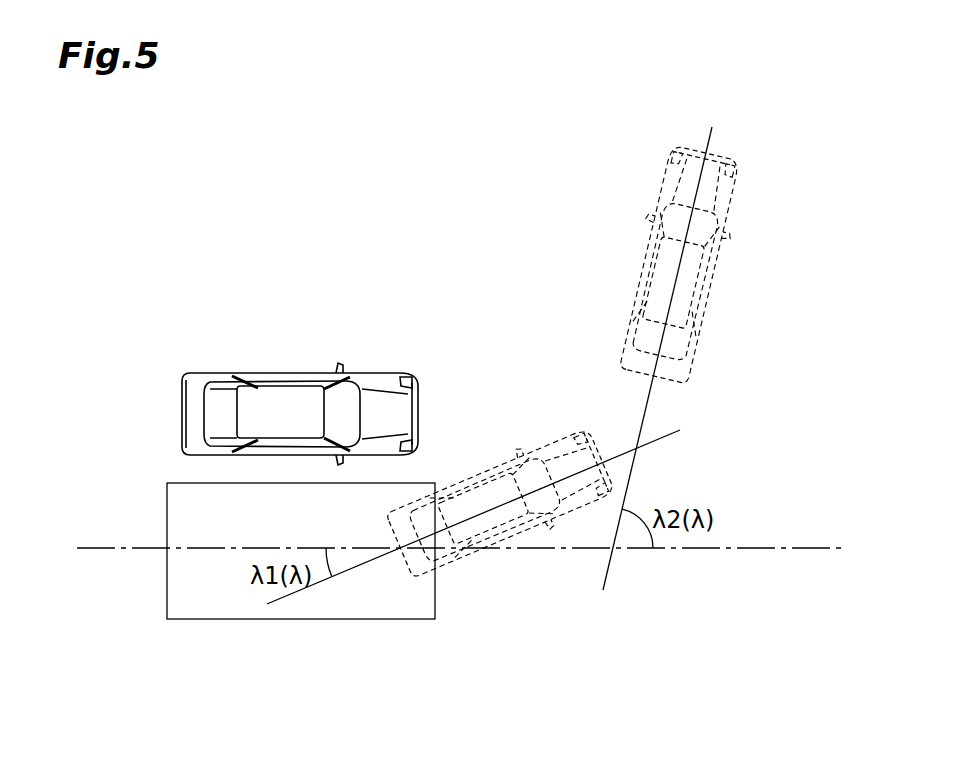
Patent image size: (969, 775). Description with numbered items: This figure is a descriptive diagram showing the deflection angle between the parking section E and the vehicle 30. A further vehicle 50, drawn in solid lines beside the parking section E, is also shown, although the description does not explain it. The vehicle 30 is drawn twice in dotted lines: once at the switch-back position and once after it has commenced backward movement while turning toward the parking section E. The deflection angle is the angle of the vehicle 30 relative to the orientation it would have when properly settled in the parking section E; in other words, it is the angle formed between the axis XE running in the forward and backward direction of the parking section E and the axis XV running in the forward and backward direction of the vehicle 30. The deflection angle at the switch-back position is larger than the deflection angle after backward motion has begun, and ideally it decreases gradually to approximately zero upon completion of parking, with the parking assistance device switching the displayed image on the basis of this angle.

The vehicle (own vehicle) 50 is at (182, 413).
The vehicle 30 is at (486, 470).
The parking section E is at (340, 620).
The axis in the forward and backward direction of the parking section XE is at (437, 555).
The axis in the forward and backward direction of the vehicle XV is at (496, 352).